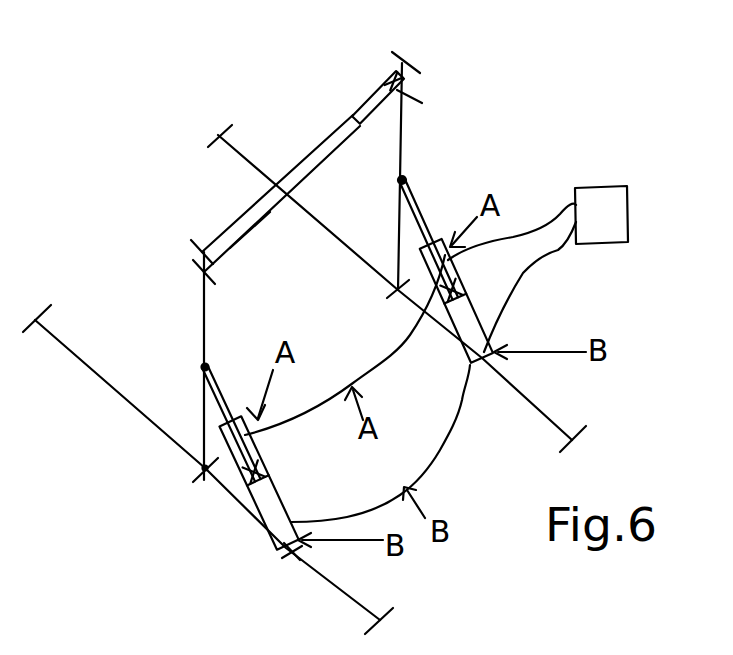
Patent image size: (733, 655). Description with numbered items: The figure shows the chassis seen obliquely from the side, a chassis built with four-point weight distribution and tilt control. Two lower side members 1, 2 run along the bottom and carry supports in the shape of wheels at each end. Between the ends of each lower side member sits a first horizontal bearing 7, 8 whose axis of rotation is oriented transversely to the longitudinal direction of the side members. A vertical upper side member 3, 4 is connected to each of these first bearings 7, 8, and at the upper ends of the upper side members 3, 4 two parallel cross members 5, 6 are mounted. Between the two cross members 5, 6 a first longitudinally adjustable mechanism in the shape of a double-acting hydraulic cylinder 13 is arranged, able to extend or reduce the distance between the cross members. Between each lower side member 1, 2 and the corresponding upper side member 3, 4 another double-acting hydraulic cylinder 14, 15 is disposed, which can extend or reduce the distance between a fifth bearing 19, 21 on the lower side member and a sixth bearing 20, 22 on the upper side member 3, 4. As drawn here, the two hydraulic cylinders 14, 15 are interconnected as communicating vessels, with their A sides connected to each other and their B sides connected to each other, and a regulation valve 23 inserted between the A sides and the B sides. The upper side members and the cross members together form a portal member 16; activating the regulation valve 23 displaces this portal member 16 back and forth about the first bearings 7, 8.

The lower side member 1 is at (118, 398).
The lower side member 2 is at (532, 404).
The vertical upper side member 3 is at (204, 307).
The vertical upper side member 4 is at (401, 140).
The cross member 5 is at (250, 228).
The cross member 6 is at (327, 138).
The first horizontal bearing 7 is at (204, 478).
The first horizontal bearing 8 is at (398, 293).
The double-acting hydraulic cylinder 13 is at (380, 96).
The double-acting hydraulic cylinder 14 is at (288, 493).
The double-acting hydraulic cylinder 15 is at (505, 338).
The portal member 16 is at (442, 117).
The fifth bearing 19 is at (292, 552).
The sixth bearing 20 is at (206, 366).
The fifth bearing 21 is at (478, 368).
The sixth bearing 22 is at (404, 178).
The regulation valve 23 is at (628, 205).